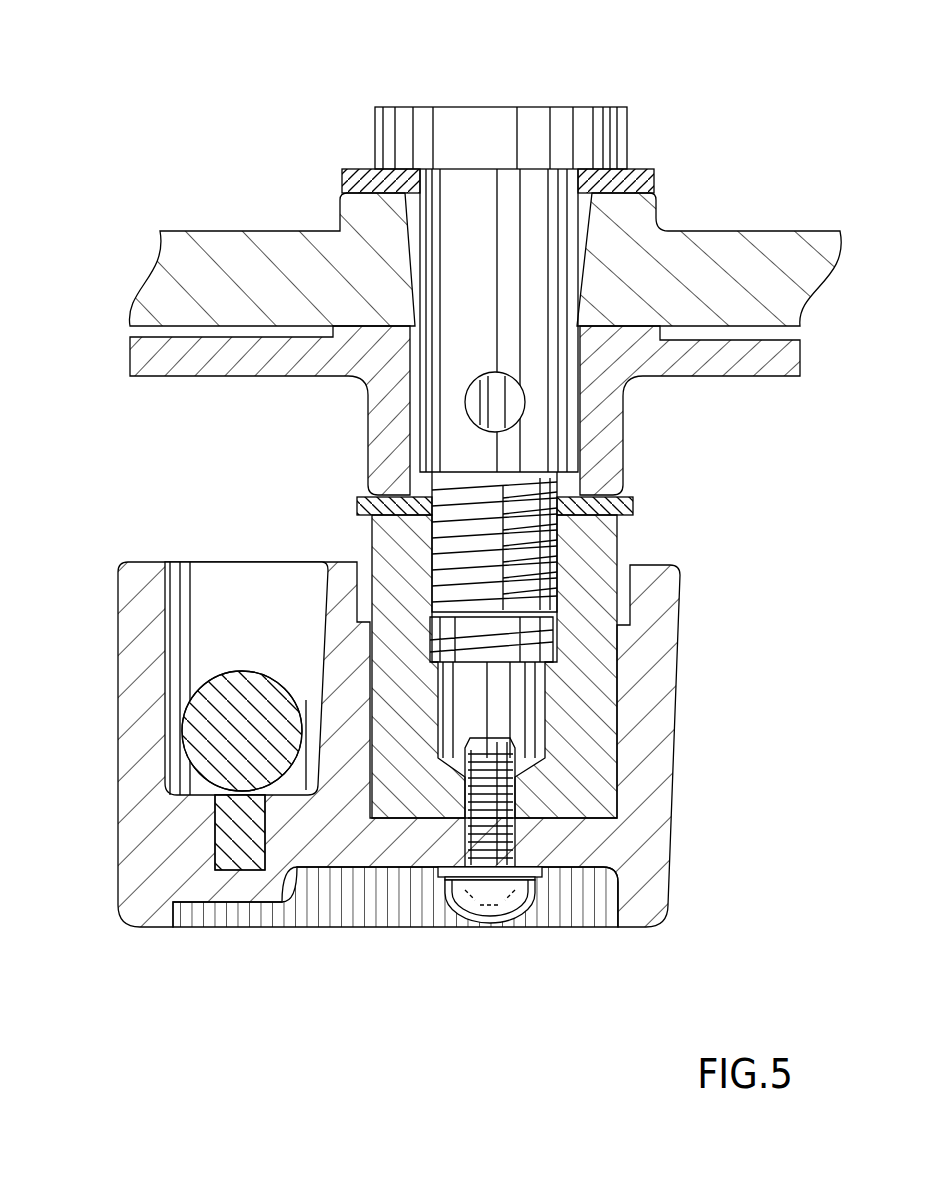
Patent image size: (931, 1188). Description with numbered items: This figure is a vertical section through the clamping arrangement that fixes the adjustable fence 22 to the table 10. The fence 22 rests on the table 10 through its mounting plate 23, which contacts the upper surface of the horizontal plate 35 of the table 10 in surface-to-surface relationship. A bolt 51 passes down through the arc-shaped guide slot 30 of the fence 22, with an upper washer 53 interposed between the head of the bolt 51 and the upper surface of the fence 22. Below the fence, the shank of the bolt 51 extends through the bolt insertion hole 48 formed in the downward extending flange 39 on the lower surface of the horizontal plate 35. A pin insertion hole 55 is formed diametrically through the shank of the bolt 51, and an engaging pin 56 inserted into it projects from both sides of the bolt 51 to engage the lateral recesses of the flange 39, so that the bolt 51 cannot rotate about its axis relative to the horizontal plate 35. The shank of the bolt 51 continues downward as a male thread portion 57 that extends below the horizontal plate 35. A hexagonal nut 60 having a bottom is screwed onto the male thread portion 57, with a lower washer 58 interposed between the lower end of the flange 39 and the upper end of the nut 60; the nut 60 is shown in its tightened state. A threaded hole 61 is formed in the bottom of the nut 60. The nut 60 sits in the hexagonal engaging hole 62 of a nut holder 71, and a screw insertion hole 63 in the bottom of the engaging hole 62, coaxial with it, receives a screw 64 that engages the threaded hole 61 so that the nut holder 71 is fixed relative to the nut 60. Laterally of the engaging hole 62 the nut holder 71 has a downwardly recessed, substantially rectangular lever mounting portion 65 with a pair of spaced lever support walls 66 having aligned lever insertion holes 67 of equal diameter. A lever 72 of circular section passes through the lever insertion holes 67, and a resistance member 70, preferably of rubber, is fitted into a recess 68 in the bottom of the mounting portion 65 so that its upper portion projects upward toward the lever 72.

The table 10 is at (759, 377).
The adjustable fence 22 is at (822, 233).
The mounting plate 23 is at (776, 243).
The arc-shaped guide slot 30 is at (412, 258).
The horizontal plate 35 is at (790, 360).
The downward extending flange 39 is at (605, 458).
The bolt insertion hole 48 is at (407, 424).
The bolt 51 is at (533, 118).
The upper washer 53 is at (640, 166).
The pin insertion hole 55 is at (492, 373).
The engaging pin 56 is at (523, 413).
The male thread portion 57 is at (540, 588).
The lower washer 58 is at (372, 503).
The hexagonal nut 60 is at (605, 690).
The threaded hole 61 is at (480, 758).
The hexagonal engaging hole 62 is at (608, 752).
The screw insertion hole 63 is at (500, 868).
The screw 64 is at (488, 908).
The lever mounting portion 65 is at (130, 660).
The lever support walls 66 is at (240, 576).
The lever insertion holes 67 is at (208, 672).
The recess 68 is at (232, 866).
The resistance member 70 is at (222, 827).
The nut holder 71 is at (645, 930).
The lever 72 is at (188, 740).